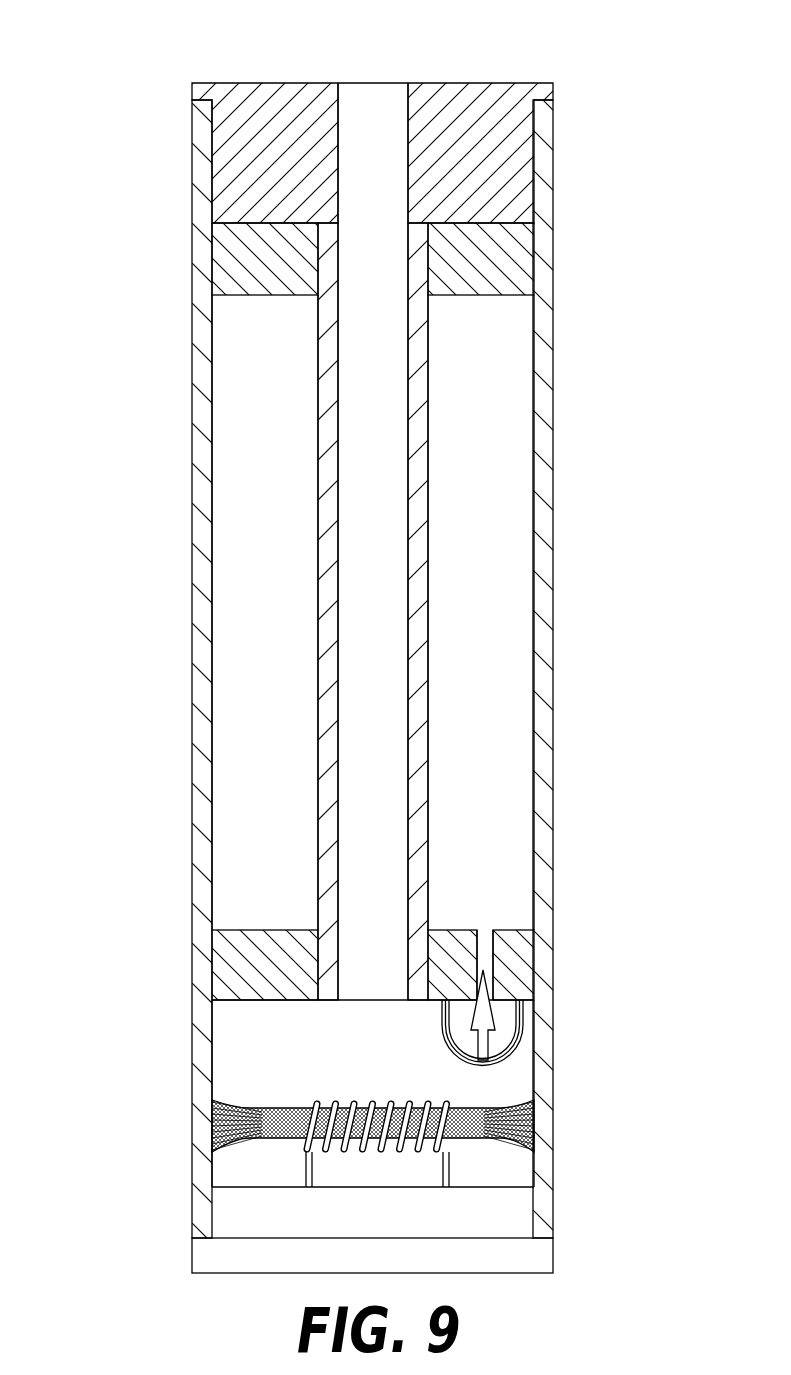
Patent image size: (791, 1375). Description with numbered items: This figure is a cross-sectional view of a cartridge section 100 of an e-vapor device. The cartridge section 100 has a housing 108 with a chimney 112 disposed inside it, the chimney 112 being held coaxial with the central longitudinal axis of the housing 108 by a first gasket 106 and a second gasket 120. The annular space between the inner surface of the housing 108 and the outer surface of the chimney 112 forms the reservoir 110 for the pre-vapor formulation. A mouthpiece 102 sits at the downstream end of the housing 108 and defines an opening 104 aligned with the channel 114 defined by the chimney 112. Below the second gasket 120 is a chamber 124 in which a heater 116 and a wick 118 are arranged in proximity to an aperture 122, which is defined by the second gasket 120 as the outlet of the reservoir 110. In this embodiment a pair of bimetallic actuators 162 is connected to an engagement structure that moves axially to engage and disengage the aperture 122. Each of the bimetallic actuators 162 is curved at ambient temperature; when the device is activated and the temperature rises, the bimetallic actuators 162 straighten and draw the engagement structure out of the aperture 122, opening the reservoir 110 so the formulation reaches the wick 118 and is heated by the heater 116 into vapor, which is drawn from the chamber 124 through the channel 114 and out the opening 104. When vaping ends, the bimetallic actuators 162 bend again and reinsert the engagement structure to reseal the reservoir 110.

The cartridge section 100 is at (107, 64).
The mouthpiece 102 is at (503, 97).
The opening 104 is at (370, 100).
The first gasket 106 is at (495, 258).
The housing 108 is at (537, 433).
The reservoir 110 is at (253, 502).
The chimney 112 is at (415, 648).
The channel 114 is at (358, 668).
The heater 116 is at (447, 1103).
The wick 118 is at (495, 1105).
The second gasket 120 is at (235, 950).
The aperture 122 is at (480, 955).
The chamber 124 is at (233, 1072).
The pair of bimetallic actuators 162 is at (435, 1030).